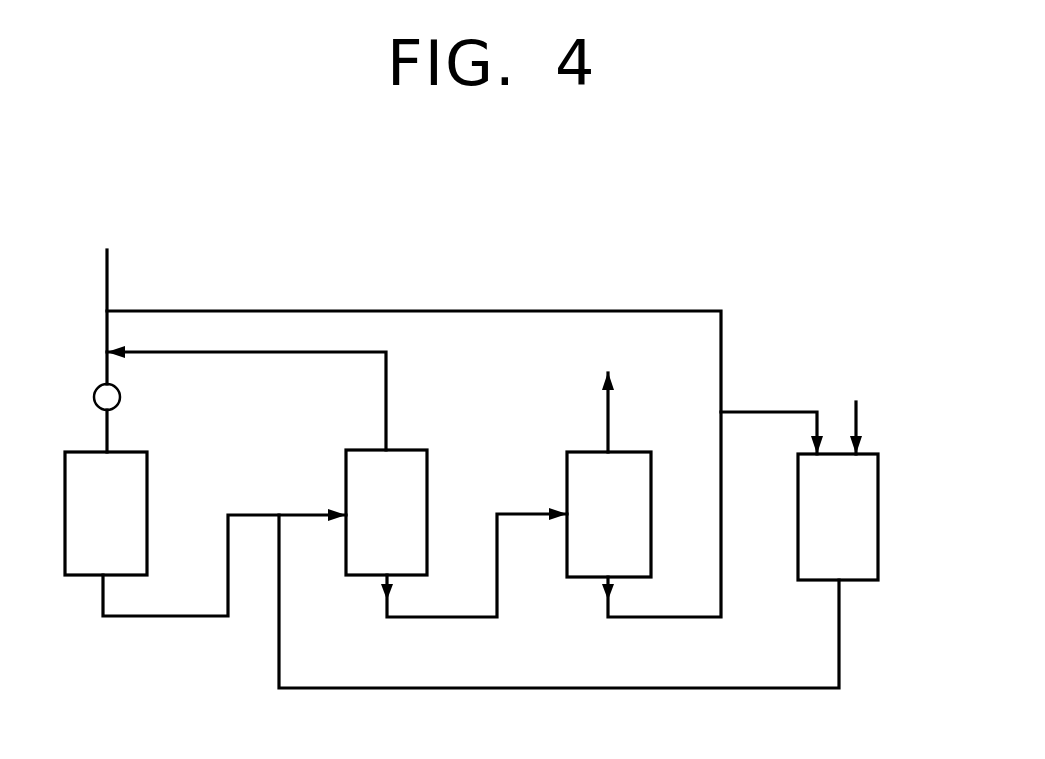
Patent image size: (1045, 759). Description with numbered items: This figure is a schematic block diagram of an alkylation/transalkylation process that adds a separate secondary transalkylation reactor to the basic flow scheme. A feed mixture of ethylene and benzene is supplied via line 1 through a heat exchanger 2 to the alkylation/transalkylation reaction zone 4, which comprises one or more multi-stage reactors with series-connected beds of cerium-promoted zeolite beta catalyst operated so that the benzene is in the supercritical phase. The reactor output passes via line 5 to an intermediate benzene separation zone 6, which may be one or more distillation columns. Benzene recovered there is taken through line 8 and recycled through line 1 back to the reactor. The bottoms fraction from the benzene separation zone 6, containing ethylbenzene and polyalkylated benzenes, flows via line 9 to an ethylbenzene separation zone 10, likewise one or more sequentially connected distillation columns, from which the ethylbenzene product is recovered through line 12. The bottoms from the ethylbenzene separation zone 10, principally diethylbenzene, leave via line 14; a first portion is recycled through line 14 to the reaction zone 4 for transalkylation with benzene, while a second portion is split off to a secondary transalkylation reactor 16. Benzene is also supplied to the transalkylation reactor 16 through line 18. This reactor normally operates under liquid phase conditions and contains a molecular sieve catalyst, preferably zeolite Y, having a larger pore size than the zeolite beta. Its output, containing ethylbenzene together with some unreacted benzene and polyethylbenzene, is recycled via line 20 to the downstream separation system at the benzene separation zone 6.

The line 1 is at (105, 367).
The heat exchanger 2 is at (94, 395).
The alkylation/transalkylation reaction zone 4 is at (147, 490).
The line 5 is at (195, 614).
The benzene separation zone 6 is at (427, 494).
The line 8 is at (386, 390).
The line 9 is at (466, 615).
The ethylbenzene separation zone 10 is at (651, 489).
The line 12 is at (609, 412).
The line 14 is at (545, 309).
The secondary transalkylation reactor 16 is at (798, 495).
The line 18 is at (857, 414).
The line 20 is at (555, 687).